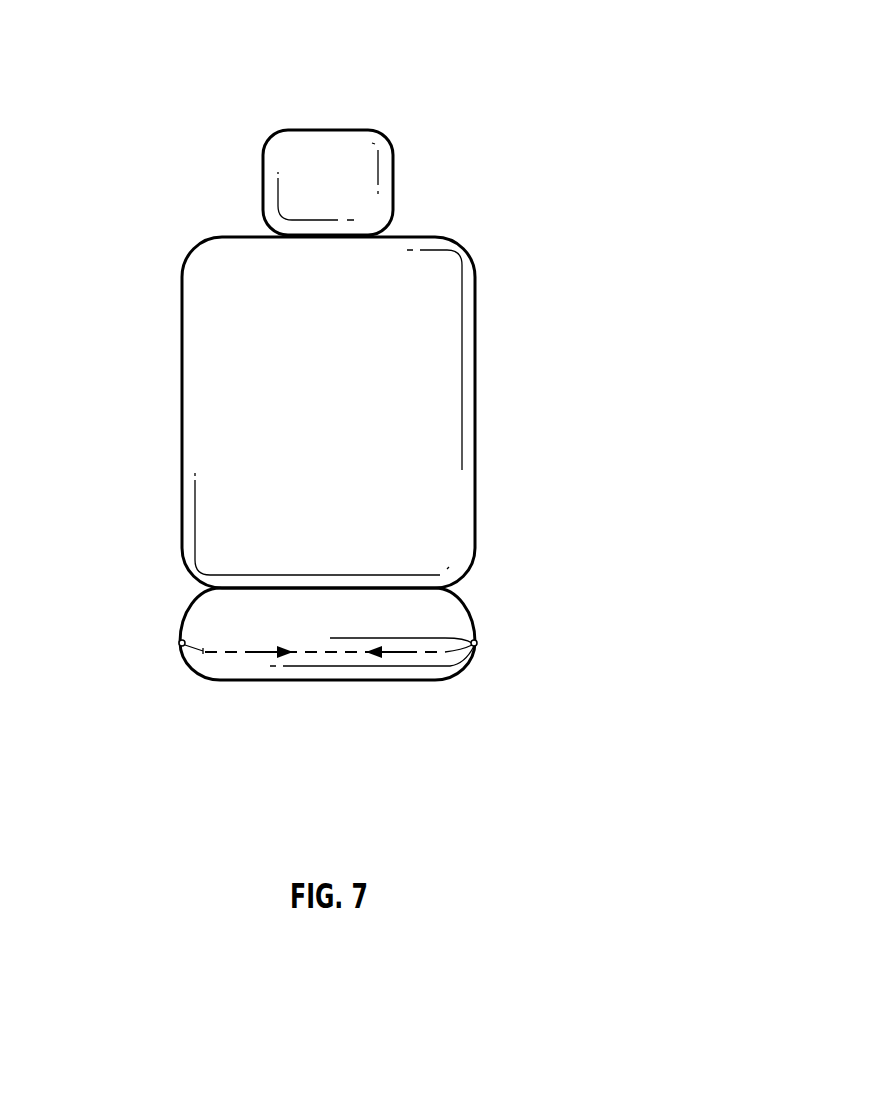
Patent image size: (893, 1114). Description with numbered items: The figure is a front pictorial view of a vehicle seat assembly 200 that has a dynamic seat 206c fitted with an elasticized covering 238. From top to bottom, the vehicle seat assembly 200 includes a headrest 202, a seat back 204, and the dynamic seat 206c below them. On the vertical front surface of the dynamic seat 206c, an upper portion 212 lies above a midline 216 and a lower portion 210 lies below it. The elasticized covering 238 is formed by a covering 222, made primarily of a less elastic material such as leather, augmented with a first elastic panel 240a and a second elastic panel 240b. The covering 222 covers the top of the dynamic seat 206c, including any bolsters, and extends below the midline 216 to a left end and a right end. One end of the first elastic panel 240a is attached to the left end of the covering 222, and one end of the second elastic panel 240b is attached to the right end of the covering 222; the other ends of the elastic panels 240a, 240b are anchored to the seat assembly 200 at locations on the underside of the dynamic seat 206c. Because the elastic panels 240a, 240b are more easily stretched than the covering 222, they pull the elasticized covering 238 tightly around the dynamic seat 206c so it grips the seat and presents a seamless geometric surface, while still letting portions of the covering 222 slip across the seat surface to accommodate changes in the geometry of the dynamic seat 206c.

The vehicle seat assembly 200 is at (441, 49).
The headrest 202 is at (383, 172).
The seat back 204 is at (457, 333).
The dynamic seat 206c is at (397, 641).
The upper portion 212 is at (359, 607).
The covering 222 is at (330, 612).
The elasticized covering 238 is at (294, 670).
The first elastic panel 240a is at (206, 650).
The second elastic panel 240b is at (448, 650).
The midline 216 is at (330, 655).
The lower portion 210 is at (432, 663).